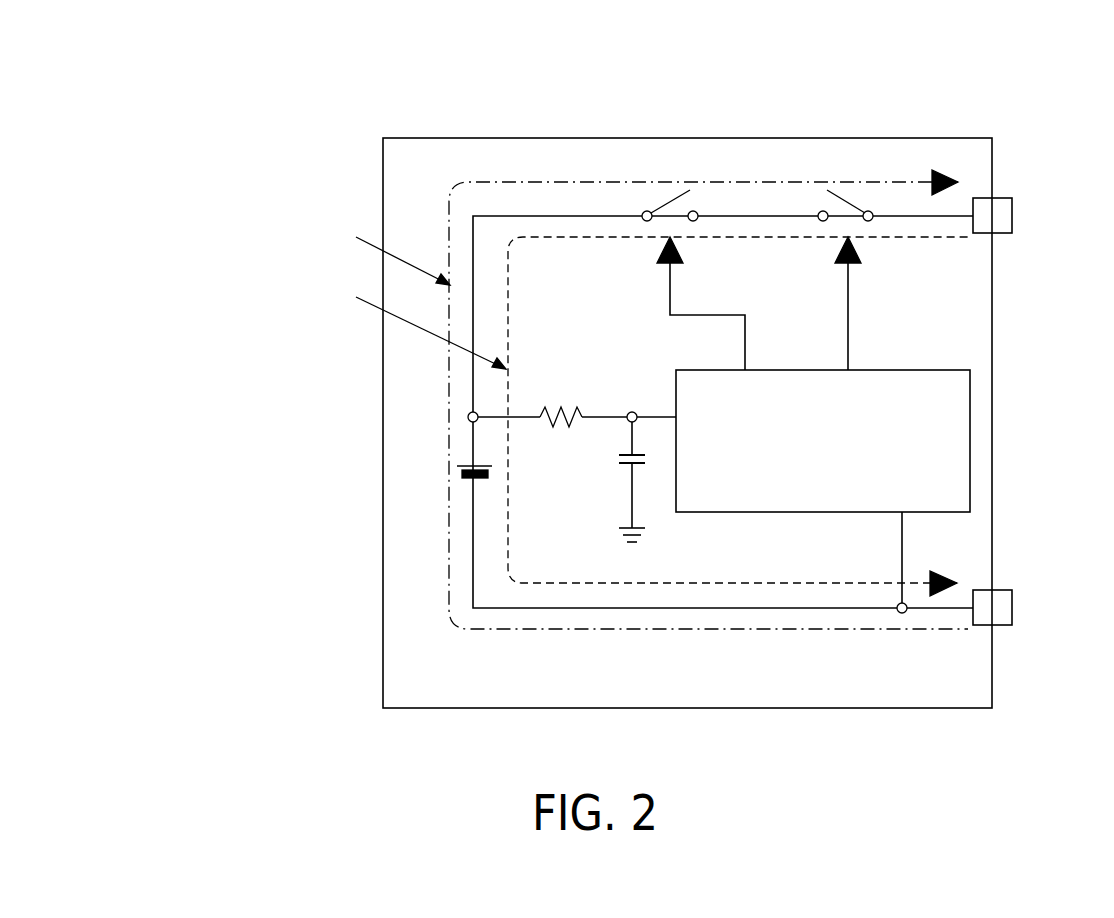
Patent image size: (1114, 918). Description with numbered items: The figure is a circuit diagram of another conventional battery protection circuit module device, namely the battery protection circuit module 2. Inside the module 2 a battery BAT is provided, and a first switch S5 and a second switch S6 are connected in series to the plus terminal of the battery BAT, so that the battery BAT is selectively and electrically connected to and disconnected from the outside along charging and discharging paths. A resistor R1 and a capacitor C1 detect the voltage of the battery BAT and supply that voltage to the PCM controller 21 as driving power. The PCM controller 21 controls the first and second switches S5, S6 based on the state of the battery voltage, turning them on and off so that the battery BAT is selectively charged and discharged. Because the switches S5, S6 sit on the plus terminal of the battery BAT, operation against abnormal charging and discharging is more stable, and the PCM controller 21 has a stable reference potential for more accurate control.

The battery protection circuit module 2 is at (591, 366).
The PCM controller 21 is at (781, 380).
The first switch S5 is at (670, 183).
The second switch S6 is at (845, 183).
The resistor R1 is at (561, 398).
The capacitor C1 is at (610, 479).
The battery BAT is at (443, 469).